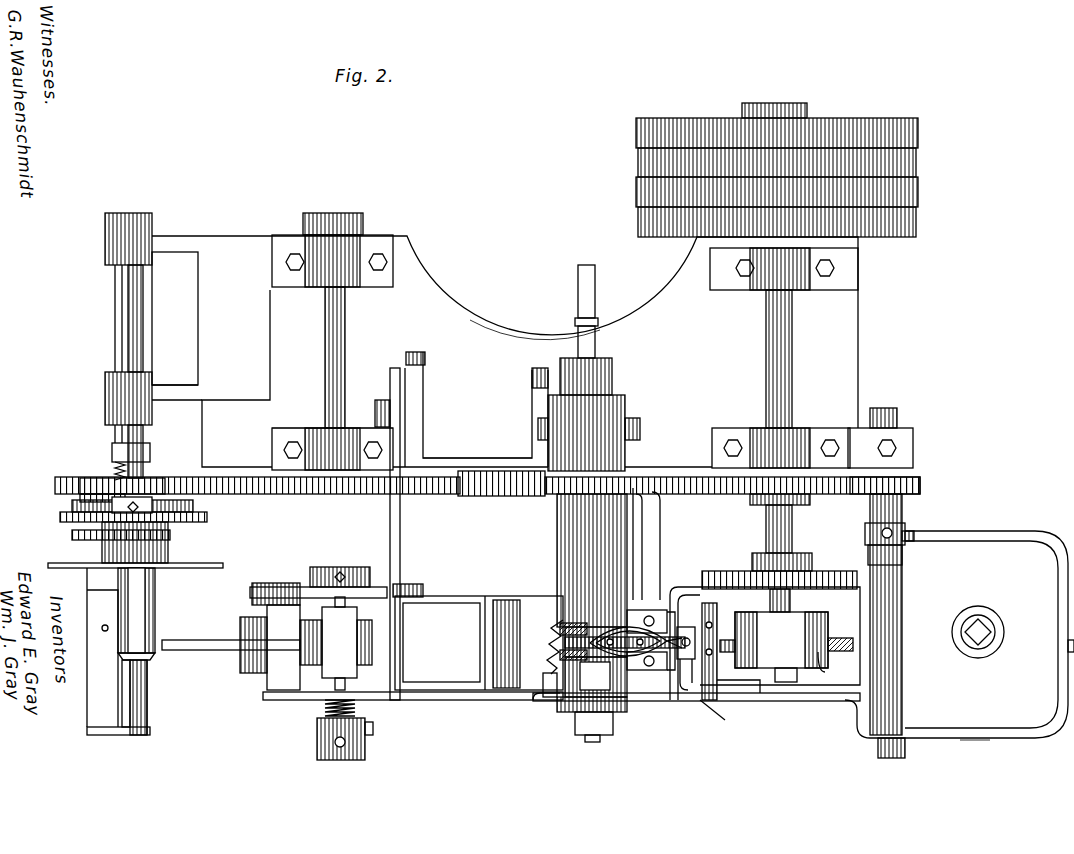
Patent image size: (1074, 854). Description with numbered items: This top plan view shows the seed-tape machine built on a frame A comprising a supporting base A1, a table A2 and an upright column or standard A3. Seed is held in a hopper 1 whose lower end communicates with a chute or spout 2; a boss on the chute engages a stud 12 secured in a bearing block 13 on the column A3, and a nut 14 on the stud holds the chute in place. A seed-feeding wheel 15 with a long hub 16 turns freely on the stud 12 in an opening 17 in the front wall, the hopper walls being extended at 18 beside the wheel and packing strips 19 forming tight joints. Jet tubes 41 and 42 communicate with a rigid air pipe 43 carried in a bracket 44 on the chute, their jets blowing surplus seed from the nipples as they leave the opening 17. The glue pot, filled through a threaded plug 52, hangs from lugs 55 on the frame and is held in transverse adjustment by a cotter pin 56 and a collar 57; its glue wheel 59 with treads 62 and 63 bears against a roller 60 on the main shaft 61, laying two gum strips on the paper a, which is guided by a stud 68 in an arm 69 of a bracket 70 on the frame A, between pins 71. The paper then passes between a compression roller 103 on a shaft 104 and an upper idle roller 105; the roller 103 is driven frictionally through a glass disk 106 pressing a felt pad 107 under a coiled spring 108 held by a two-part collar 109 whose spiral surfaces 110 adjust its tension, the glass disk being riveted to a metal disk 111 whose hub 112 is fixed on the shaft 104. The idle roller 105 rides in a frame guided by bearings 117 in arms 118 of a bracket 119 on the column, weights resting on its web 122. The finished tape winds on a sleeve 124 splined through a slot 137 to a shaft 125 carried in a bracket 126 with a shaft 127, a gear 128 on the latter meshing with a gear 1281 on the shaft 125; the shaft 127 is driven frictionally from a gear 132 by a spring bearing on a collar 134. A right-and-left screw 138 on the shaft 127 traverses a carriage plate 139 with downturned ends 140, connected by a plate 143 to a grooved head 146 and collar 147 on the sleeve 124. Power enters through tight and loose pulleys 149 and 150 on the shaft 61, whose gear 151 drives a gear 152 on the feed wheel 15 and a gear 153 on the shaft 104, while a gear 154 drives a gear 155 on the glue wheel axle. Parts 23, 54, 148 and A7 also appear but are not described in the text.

The hopper 1 is at (442, 661).
The chute or spout 2 is at (530, 690).
The stud 12 is at (612, 376).
The bearing block 13 is at (625, 406).
The nut 14 is at (572, 737).
The seed-feeding wheel 15 is at (592, 595).
The hub 16 is at (568, 637).
The opening 17 is at (516, 643).
The extended hopper walls 18 is at (620, 603).
The packing strips 19 is at (546, 660).
The spindle 23 is at (596, 352).
The jet tube 41 is at (640, 612).
The jet tube 42 is at (588, 680).
The rigid tube 43 is at (700, 692).
The bracket 44 is at (678, 692).
The plug 52 is at (988, 626).
The bracket 54 is at (910, 427).
The lugs 55 is at (905, 545).
The cotter pin 56 is at (880, 742).
The collar 57 is at (905, 522).
The glue wheel 59 is at (840, 657).
The roller 60 is at (765, 643).
The shaft 61 is at (768, 390).
The tread 62 is at (858, 630).
The tread 63 is at (855, 644).
The guide stud 68 is at (716, 682).
The arm 69 is at (685, 700).
The bracket 70 is at (652, 536).
The pins 71 is at (752, 606).
The lower compression roller 103 is at (255, 614).
The shaft 104 is at (338, 350).
The upper idle roller 105 is at (302, 657).
The glass disk 106 is at (318, 557).
The felt pad 107 is at (290, 610).
The coiled spring 108 is at (356, 706).
The collar 109 is at (345, 750).
The spiral surfaces 110 is at (340, 745).
The metal disk 111 is at (318, 568).
The hub 112 is at (332, 568).
The guide bearings 117 is at (345, 600).
The arms 118 is at (425, 594).
The bracket 119 is at (398, 545).
The web 122 is at (347, 642).
The sleeve 124 is at (152, 602).
The shaft 125 is at (136, 318).
The bracket 126 is at (208, 345).
The shaft 127 is at (115, 322).
The gear 128 is at (80, 484).
The gear 1281 is at (172, 535).
The driving gear 132 is at (112, 466).
The collar 134 is at (112, 452).
The slot 137 is at (147, 696).
The screw 138 is at (148, 710).
The plate 139 is at (105, 647).
The downwardly turned end 140 is at (100, 735).
The plate 143 is at (75, 505).
The head 146 is at (70, 516).
The collar 147 is at (118, 548).
The plate 148 is at (205, 568).
The tight pulley 149 is at (636, 140).
The loose pulley 150 is at (636, 200).
The gear 151 is at (912, 474).
The gear 152 is at (516, 496).
The gear 153 is at (273, 494).
The gear 154 is at (779, 553).
The gear 155 is at (870, 578).
The frame A is at (505, 351).
The supporting base A1 is at (497, 335).
The table A2 is at (300, 420).
The column or standard A3 is at (488, 452).
The frame portion A7 is at (989, 726).
The strip of paper a is at (215, 640).